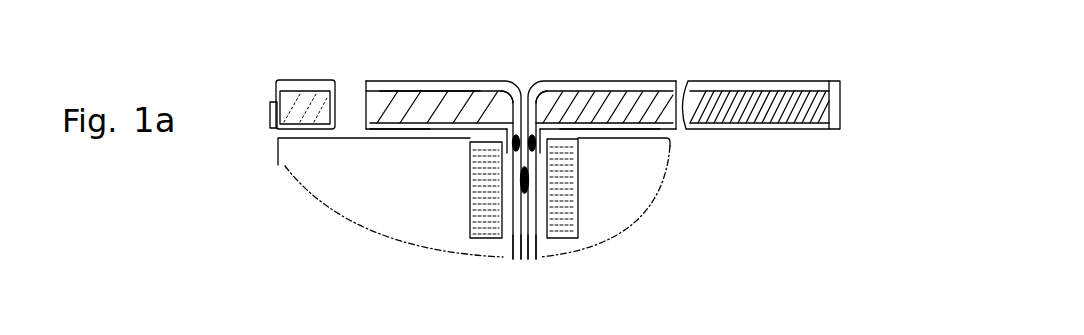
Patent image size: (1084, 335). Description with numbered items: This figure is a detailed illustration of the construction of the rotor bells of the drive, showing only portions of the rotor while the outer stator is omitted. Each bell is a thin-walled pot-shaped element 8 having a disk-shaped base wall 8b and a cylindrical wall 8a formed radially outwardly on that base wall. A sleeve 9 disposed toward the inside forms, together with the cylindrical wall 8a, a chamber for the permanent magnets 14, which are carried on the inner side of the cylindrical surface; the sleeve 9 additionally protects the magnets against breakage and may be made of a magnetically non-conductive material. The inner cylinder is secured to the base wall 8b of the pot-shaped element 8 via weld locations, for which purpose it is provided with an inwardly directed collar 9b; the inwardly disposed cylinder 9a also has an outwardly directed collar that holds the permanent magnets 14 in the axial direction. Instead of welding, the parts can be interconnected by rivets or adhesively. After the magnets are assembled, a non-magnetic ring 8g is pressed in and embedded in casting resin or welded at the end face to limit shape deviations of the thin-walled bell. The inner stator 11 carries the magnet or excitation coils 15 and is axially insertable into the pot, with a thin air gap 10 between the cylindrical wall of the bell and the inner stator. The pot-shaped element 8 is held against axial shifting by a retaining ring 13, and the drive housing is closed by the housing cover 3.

The housing cover 3 is at (535, 142).
The pot-shaped element 8 is at (392, 81).
The cylindrical wall 8a is at (433, 82).
The base wall 8b is at (535, 234).
The non-magnetic ring 8g is at (841, 105).
The sleeve 9 is at (400, 130).
The inwardly disposed cylinder 9a is at (272, 115).
The inwardly directed collar 9b is at (508, 133).
The air gap 10 is at (653, 129).
The inner stator 11 is at (233, 183).
The retaining ring 13 is at (550, 55).
The permanent magnet 14 is at (307, 107).
The excitation coil 15 is at (482, 212).